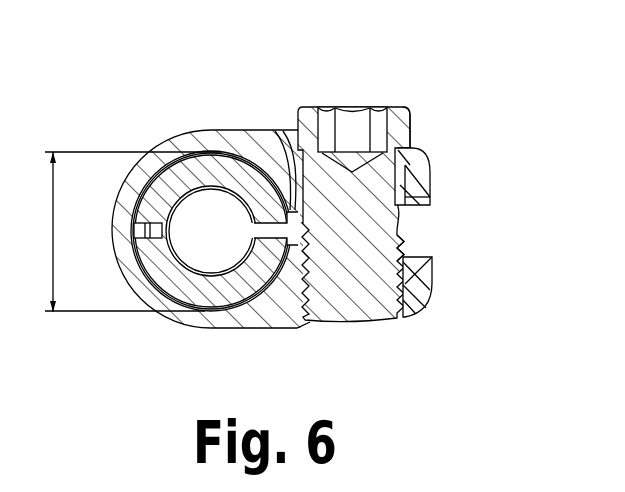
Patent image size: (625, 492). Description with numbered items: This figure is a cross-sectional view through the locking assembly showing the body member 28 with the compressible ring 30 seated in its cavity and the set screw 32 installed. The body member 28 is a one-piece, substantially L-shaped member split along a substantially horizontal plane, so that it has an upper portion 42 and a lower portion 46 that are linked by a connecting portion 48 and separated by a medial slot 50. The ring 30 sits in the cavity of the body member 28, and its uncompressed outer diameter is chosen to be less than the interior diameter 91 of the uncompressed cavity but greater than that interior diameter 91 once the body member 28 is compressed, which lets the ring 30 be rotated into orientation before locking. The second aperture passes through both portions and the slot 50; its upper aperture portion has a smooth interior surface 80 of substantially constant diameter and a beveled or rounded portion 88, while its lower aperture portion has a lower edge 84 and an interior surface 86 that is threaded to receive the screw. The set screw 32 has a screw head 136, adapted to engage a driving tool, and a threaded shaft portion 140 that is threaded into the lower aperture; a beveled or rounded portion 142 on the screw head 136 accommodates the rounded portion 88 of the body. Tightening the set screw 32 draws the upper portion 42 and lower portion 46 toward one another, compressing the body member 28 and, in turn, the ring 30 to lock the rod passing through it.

The body member 28 is at (272, 191).
The compressible ring 30 is at (133, 294).
The set screw 32 is at (412, 122).
The upper portion 42 is at (447, 175).
The lower portion 46 is at (432, 284).
The connecting portion 48 is at (122, 254).
The medial slot 50 is at (188, 130).
The interior surface 80 is at (431, 197).
The lower edge 84 is at (307, 318).
The interior surface 86 is at (449, 282).
The beveled or rounded portion 88 is at (272, 129).
The interior diameter 91 is at (133, 232).
The screw head 136 is at (398, 193).
The threaded shaft portion 140 is at (399, 224).
The beveled or rounded portion 142 is at (307, 108).